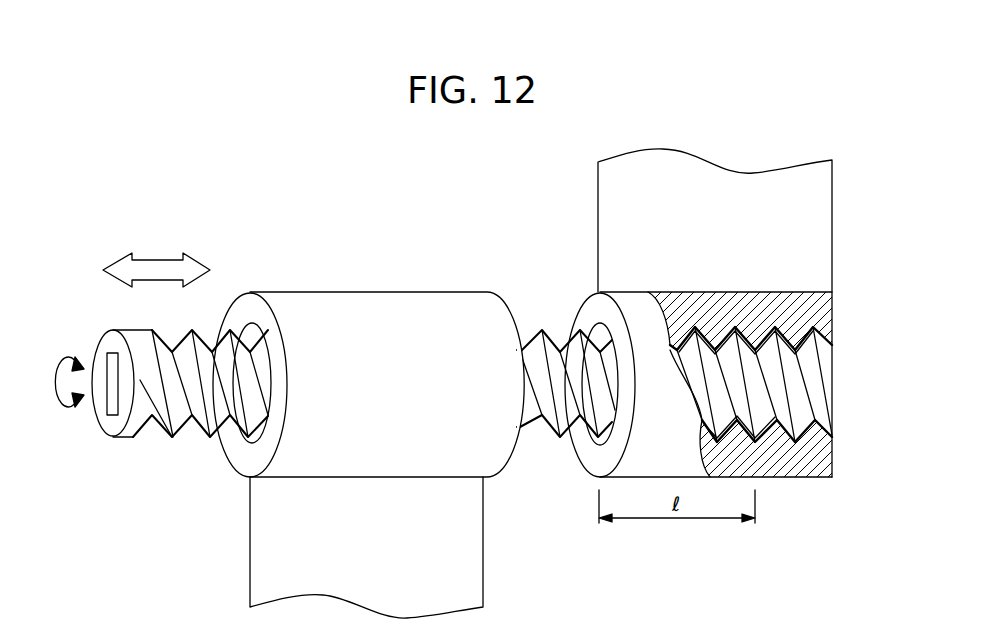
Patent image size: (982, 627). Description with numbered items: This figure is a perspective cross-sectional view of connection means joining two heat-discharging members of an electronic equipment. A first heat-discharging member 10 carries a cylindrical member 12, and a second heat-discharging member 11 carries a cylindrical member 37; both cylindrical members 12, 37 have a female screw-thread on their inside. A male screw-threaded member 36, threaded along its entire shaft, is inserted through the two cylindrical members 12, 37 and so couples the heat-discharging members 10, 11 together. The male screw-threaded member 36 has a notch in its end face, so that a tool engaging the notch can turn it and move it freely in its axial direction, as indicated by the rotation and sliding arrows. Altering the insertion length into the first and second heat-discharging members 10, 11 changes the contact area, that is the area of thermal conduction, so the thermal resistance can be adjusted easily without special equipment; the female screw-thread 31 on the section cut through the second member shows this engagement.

The first heat-discharging member 10 is at (470, 558).
The second heat-discharging member 11 is at (780, 182).
The cylindrical member 12 is at (373, 300).
The threaded hole 31 is at (777, 427).
The male screw-threaded member 36 is at (194, 438).
The cylindrical member 37 is at (113, 412).